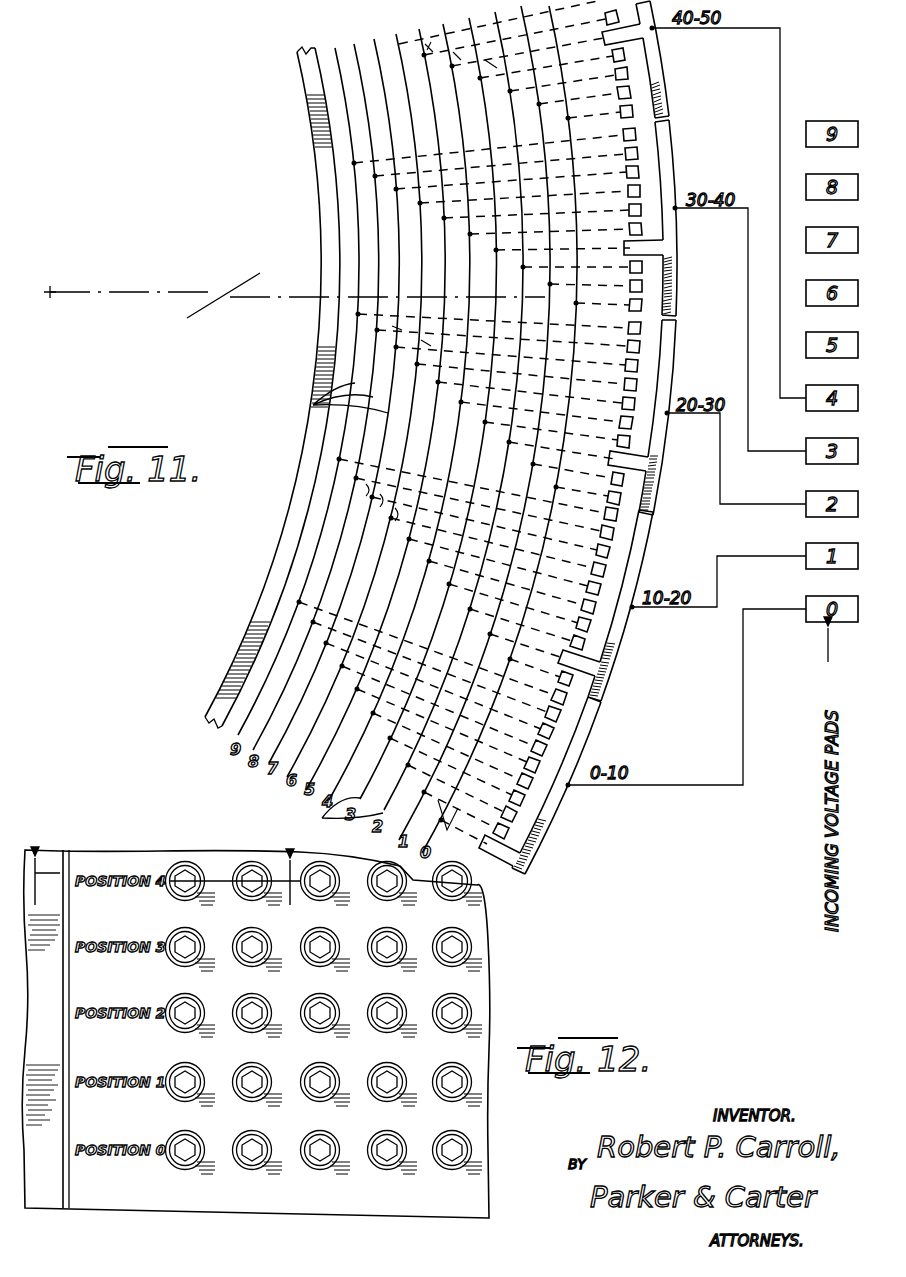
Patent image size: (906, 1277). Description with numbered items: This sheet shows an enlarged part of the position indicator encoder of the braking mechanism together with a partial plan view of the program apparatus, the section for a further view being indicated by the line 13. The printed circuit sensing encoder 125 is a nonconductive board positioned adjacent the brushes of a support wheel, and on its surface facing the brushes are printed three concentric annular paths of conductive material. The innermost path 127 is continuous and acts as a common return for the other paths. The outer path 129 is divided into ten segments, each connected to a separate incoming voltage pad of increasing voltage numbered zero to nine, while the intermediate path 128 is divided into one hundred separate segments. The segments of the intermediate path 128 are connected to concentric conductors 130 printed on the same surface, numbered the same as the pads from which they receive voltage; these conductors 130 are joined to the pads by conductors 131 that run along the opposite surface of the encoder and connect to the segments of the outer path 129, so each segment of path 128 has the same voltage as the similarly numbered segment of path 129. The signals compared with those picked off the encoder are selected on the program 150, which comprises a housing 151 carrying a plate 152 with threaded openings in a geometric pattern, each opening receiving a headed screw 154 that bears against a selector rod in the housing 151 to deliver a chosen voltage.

In FIG. 11, the printed circuit sensing encoder 125 is at (312, 170).
In FIG. 11, the innermost path 127 is at (318, 370).
In FIG. 11, the intermediate path 128 is at (645, 302).
In FIG. 11, the outer path 129 is at (664, 95).
In FIG. 11, the concentric conductors 130 is at (313, 405).
In FIG. 11, the conductors 131 is at (492, 60).
In FIG. 12, the program 150 is at (222, 848).
In FIG. 12, the housing 151 is at (48, 846).
In FIG. 12, the plate 152 is at (146, 826).
In FIG. 12, the headed screw 154 is at (256, 896).
In FIG. 12, the section line 13- 13 is at (174, 882).